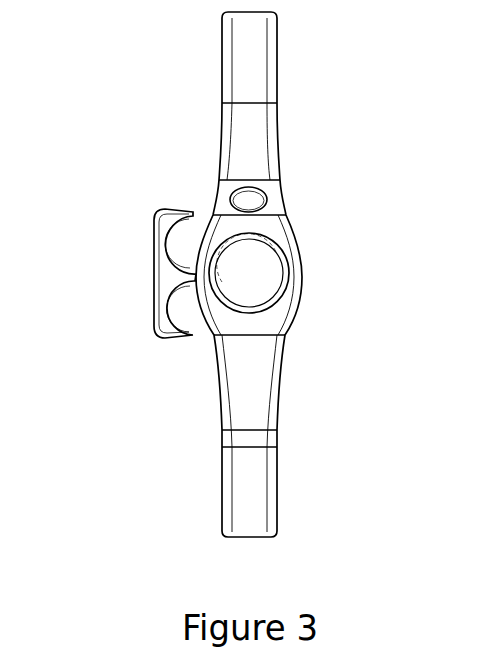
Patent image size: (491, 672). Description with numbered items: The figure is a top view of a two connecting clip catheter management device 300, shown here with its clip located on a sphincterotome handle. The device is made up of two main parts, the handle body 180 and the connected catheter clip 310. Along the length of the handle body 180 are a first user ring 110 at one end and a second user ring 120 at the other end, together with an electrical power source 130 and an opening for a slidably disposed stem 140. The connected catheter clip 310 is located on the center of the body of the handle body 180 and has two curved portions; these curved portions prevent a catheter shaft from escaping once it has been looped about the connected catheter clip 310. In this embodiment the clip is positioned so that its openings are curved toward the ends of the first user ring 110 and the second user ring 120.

The two connecting clip catheter management device 300 is at (147, 136).
The first user ring 110 is at (277, 90).
The second user ring 120 is at (222, 485).
The electrical power source 130 is at (258, 190).
The opening for a slidably disposed stem 140 is at (283, 292).
The handle body 180 is at (214, 215).
The connected catheter clip 310 is at (156, 255).